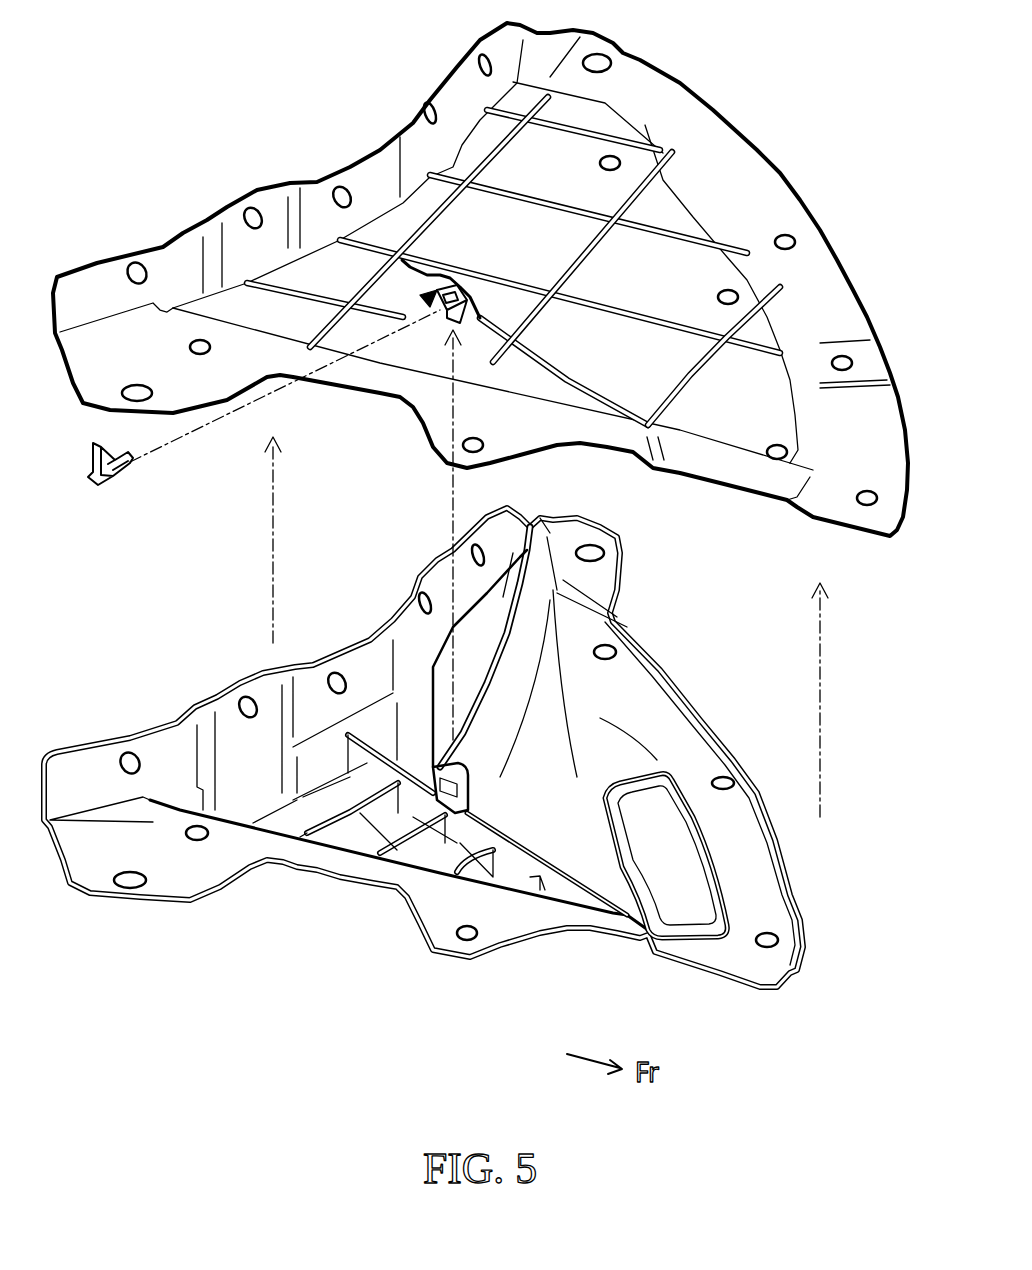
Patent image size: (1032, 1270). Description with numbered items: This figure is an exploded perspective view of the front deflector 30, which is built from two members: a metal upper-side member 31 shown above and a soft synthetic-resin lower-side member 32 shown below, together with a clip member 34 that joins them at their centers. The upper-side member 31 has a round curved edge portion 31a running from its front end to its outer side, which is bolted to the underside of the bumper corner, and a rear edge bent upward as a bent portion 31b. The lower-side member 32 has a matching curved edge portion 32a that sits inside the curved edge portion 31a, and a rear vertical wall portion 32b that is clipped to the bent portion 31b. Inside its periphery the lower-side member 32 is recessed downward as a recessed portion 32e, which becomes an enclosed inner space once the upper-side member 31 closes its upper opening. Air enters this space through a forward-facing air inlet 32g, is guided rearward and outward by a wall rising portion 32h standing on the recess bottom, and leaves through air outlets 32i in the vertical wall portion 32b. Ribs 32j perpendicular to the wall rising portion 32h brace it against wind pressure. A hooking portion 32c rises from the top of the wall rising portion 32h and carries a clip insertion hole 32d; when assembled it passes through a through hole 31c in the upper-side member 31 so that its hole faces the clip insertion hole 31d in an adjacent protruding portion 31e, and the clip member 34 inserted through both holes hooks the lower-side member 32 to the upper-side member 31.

The front deflector 30 is at (472, 505).
The upper-side member 31 is at (472, 308).
The lower-side member 32 is at (453, 726).
The clip member 34 is at (117, 477).
The curved edge portion 31a is at (747, 167).
The bent portion 31b is at (313, 198).
The through hole 31c is at (457, 312).
The clip insertion hole 31d is at (463, 272).
The protruding portion 31e is at (460, 272).
The curved edge portion 32a is at (687, 738).
The vertical wall portion 32b is at (358, 667).
The hooking portion 32c is at (463, 757).
The clip insertion hole 32d is at (470, 800).
The recessed portion 32e is at (627, 750).
The air inlet 32g is at (685, 870).
The wall rising portion 32h is at (470, 840).
The air outlets 32i is at (521, 532).
The ribs 32j is at (385, 852).